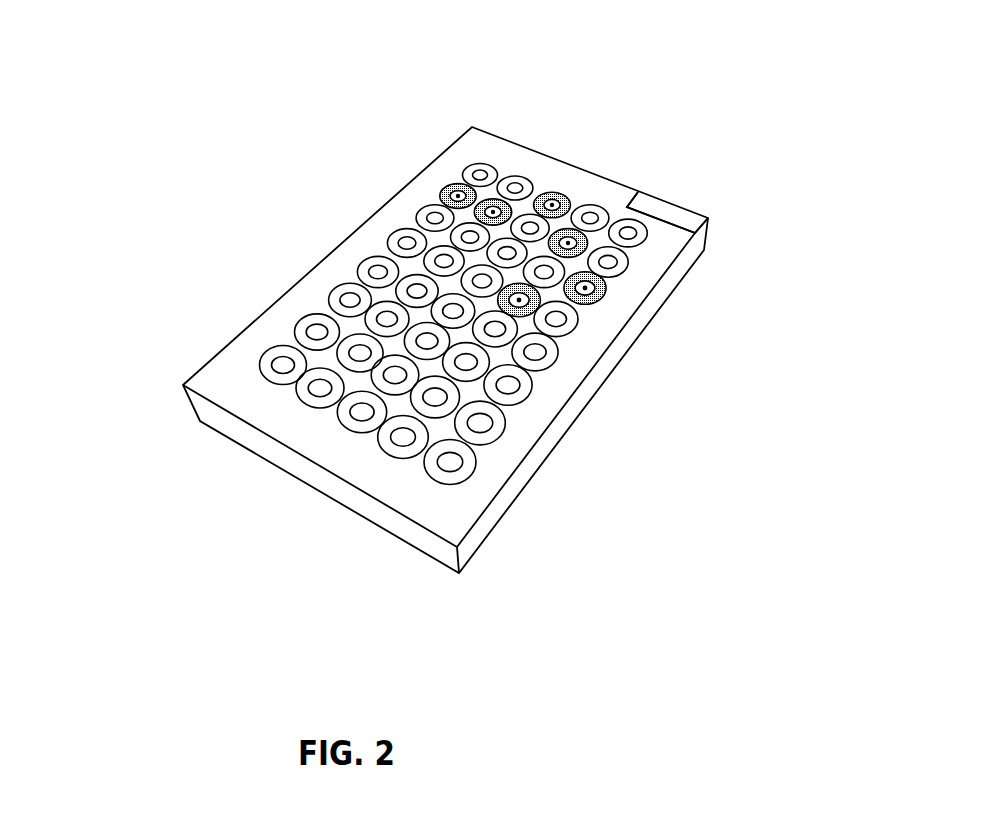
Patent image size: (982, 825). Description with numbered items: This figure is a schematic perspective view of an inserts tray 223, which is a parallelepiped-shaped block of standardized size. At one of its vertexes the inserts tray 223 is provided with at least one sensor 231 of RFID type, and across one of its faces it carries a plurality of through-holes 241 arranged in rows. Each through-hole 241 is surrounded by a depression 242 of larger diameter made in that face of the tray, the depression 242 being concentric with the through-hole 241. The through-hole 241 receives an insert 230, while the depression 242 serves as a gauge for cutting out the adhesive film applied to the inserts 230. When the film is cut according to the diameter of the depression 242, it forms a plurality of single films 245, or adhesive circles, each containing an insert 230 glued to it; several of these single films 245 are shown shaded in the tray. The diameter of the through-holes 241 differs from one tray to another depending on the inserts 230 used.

The inserts tray 223 is at (263, 312).
The sensor 231 is at (669, 212).
The through-hole 241 is at (407, 245).
The depression 242 is at (503, 432).
The single film 245 is at (546, 194).
The insert 230 is at (604, 288).